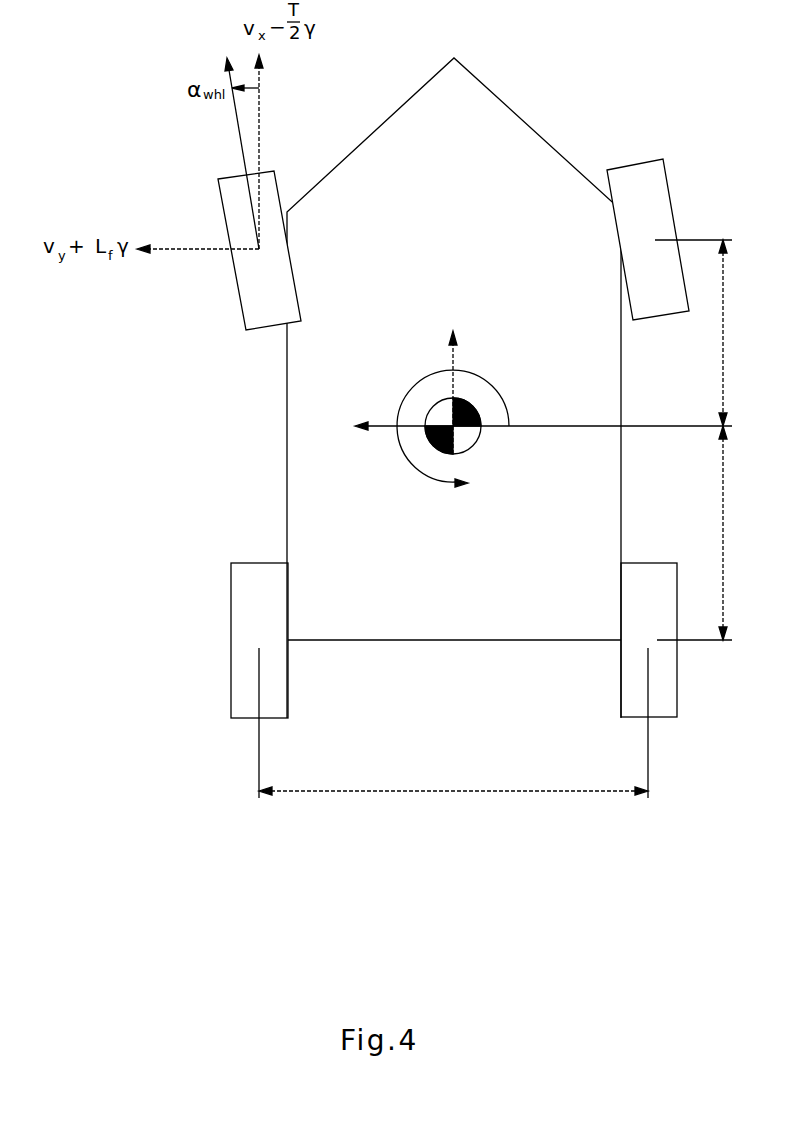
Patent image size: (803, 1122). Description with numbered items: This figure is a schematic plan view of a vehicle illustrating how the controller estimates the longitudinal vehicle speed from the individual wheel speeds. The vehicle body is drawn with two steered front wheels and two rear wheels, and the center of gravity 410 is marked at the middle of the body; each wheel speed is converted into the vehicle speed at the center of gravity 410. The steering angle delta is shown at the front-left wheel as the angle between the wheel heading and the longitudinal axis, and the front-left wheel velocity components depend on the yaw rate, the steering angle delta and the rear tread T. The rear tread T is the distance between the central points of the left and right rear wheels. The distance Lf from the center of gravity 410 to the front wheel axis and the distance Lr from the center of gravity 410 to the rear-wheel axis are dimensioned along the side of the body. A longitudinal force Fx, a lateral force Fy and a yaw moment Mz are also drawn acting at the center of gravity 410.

The center of gravity 410 is at (452, 412).
The rear tread T is at (453, 779).
The distance between center of gravity and front wheel axis Lf is at (735, 333).
The distance between center of gravity and rear-wheel axis Lr is at (736, 533).
The longitudinal force Fx is at (456, 377).
The lateral force Fy is at (530, 430).
The yaw moment Mz is at (453, 435).
The steering angle delta is at (245, 78).